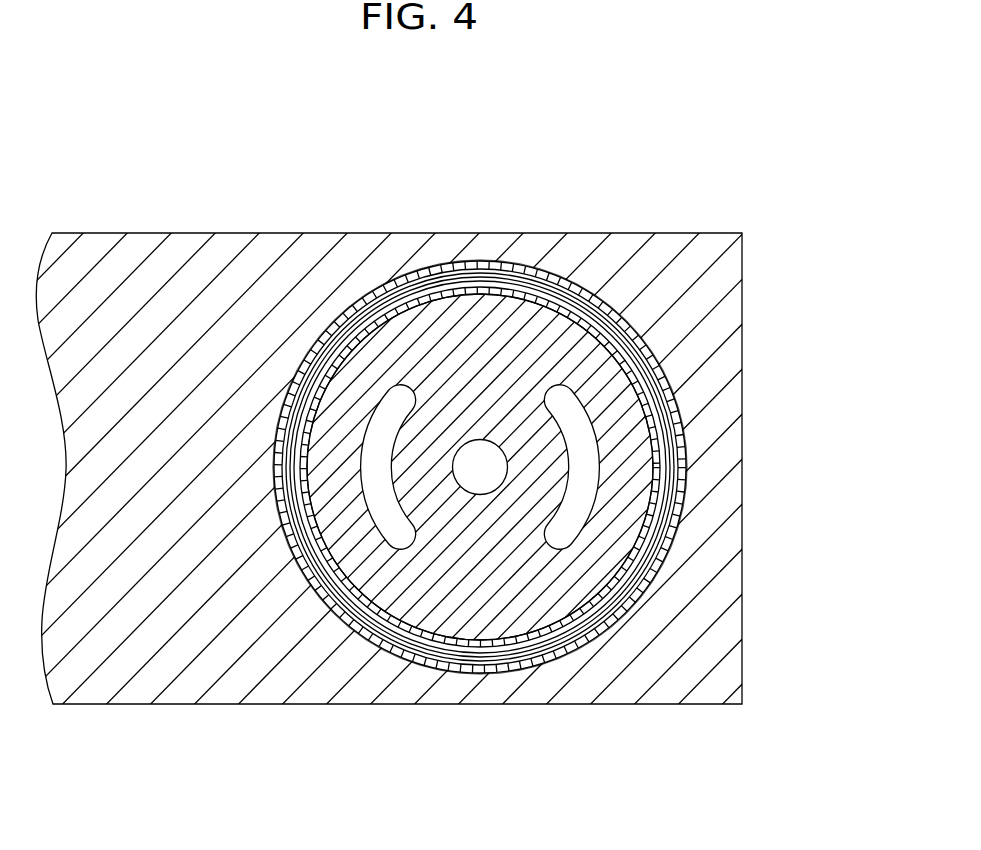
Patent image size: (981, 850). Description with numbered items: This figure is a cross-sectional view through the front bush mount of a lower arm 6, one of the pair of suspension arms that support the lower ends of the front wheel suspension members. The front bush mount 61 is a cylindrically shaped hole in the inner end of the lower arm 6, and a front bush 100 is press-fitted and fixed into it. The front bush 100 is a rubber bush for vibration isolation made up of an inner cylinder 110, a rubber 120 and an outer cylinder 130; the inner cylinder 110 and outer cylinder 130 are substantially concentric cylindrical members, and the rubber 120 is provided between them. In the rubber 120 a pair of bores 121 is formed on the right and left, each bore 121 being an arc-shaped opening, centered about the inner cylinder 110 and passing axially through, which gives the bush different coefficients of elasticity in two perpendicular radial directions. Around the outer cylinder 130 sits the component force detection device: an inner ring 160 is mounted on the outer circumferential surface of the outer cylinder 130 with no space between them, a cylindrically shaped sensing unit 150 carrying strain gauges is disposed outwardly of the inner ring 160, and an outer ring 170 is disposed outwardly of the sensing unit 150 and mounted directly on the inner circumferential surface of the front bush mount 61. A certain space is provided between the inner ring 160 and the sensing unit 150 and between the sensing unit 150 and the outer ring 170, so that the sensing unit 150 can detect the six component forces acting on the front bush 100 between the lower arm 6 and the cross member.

The lower arm 6 is at (713, 281).
The front bush mount 61 is at (592, 283).
The front bush 100 is at (332, 308).
The inner cylinder 110 is at (478, 440).
The rubber 120 is at (624, 383).
The bore 121 is at (598, 474).
The outer cylinder 130 is at (663, 553).
The sensing unit 150 is at (479, 666).
The inner ring 160 is at (588, 627).
The outer ring 170 is at (392, 655).